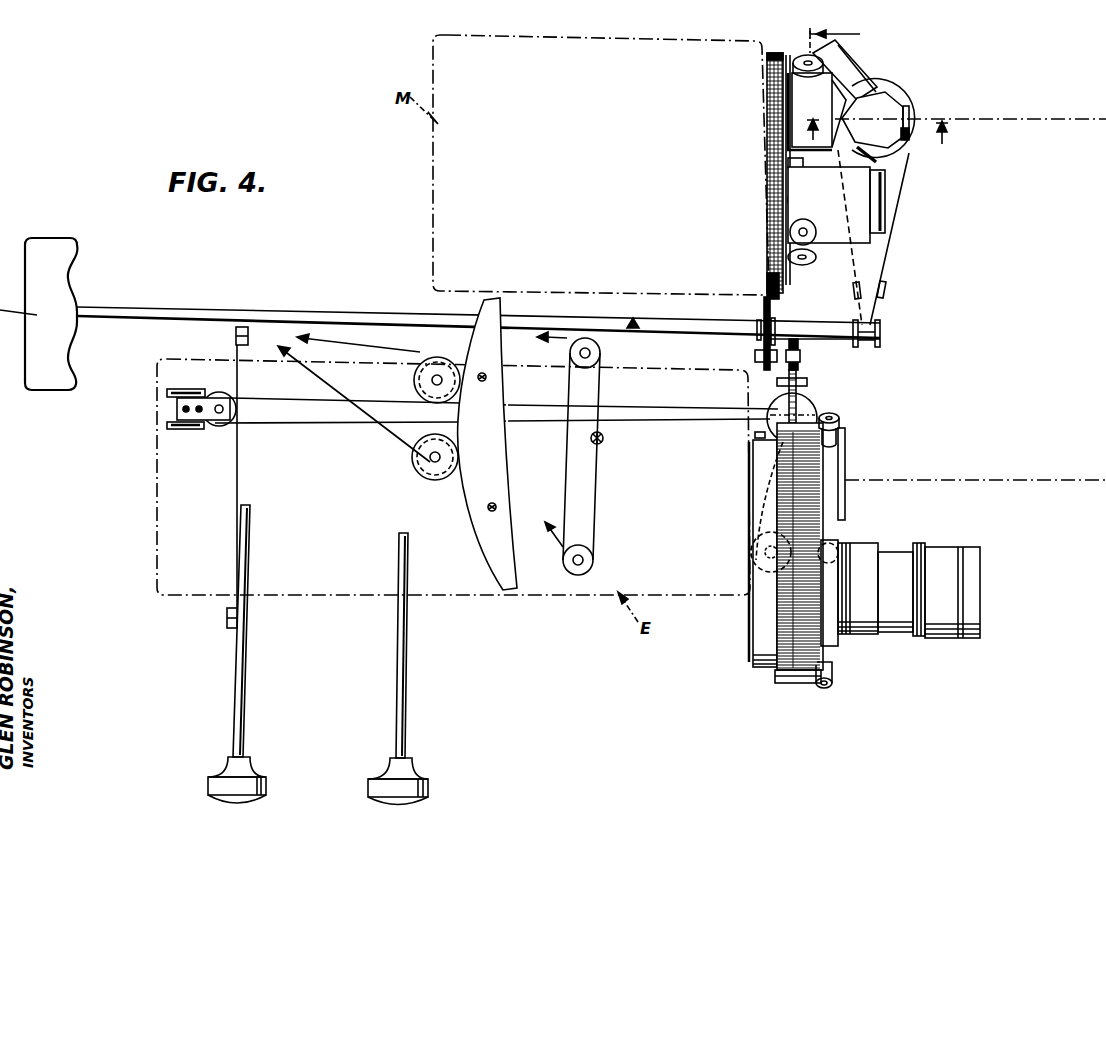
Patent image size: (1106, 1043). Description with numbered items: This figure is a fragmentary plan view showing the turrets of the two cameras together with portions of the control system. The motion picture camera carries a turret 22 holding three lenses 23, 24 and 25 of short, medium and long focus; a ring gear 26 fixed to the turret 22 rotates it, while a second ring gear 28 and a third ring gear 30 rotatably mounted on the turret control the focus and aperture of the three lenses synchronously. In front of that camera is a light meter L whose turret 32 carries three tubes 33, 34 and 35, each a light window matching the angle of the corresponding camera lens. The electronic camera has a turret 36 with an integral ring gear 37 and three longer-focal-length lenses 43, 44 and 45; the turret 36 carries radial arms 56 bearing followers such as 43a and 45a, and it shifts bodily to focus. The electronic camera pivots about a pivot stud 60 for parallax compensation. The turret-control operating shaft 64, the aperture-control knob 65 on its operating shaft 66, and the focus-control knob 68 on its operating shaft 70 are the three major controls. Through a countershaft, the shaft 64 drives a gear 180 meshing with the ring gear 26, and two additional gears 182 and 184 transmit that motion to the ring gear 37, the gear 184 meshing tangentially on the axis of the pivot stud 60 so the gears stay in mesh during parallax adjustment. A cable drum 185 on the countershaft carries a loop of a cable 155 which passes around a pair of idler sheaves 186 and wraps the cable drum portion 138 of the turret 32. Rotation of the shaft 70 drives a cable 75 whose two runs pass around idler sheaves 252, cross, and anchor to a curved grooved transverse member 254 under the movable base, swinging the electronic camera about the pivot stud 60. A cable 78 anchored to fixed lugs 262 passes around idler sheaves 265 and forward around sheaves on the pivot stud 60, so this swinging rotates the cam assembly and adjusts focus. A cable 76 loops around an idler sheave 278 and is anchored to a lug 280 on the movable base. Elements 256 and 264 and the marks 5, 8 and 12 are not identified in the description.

The pulley 5 is at (831, 124).
The section line 8 is at (876, 132).
The pointer 12 is at (670, 327).
The turret 22 is at (785, 270).
The lens 23 is at (788, 164).
The lens 24 is at (802, 99).
The lens 25 is at (875, 222).
The ring gear 26 is at (790, 226).
The second ring gear 28 is at (790, 238).
The third ring gear 30 is at (788, 257).
The turret 32 is at (885, 95).
The tube 33 is at (909, 108).
The tube 34 is at (876, 160).
The tube 35 is at (860, 70).
The turret 36 is at (823, 447).
The ring gear 37 is at (790, 683).
The lens 43 is at (870, 545).
The follower 43a is at (830, 690).
The lens 44 is at (840, 464).
The lens 45 is at (950, 547).
The follower 45a is at (838, 417).
The radial arms 56 is at (836, 431).
The pivot stud 60 is at (800, 410).
The operating shaft 64 is at (156, 310).
The knob 65 is at (376, 787).
The operating shaft 66 is at (399, 701).
The knob 68 is at (216, 785).
The operating shaft 70 is at (245, 677).
The cable 75 is at (380, 440).
The cable 76 is at (596, 507).
The cable 78 is at (322, 400).
The cable drum portion 138 is at (905, 102).
The cable 155 is at (886, 253).
The gear 180 is at (764, 310).
The gear 182 is at (755, 355).
The gear 184 is at (797, 383).
The cable drum 185 is at (880, 336).
The idler sheaves 186 is at (856, 291).
The idler sheaves 252 is at (440, 363).
The transverse member 254 is at (498, 481).
The shaft 256 is at (239, 480).
The fixed lugs 262 is at (235, 337).
The pulley block 264 is at (220, 423).
The idler sheaves 265 is at (199, 382).
The idler sheave 278 is at (593, 560).
The lug 280 is at (603, 440).
The light meter L is at (914, 117).